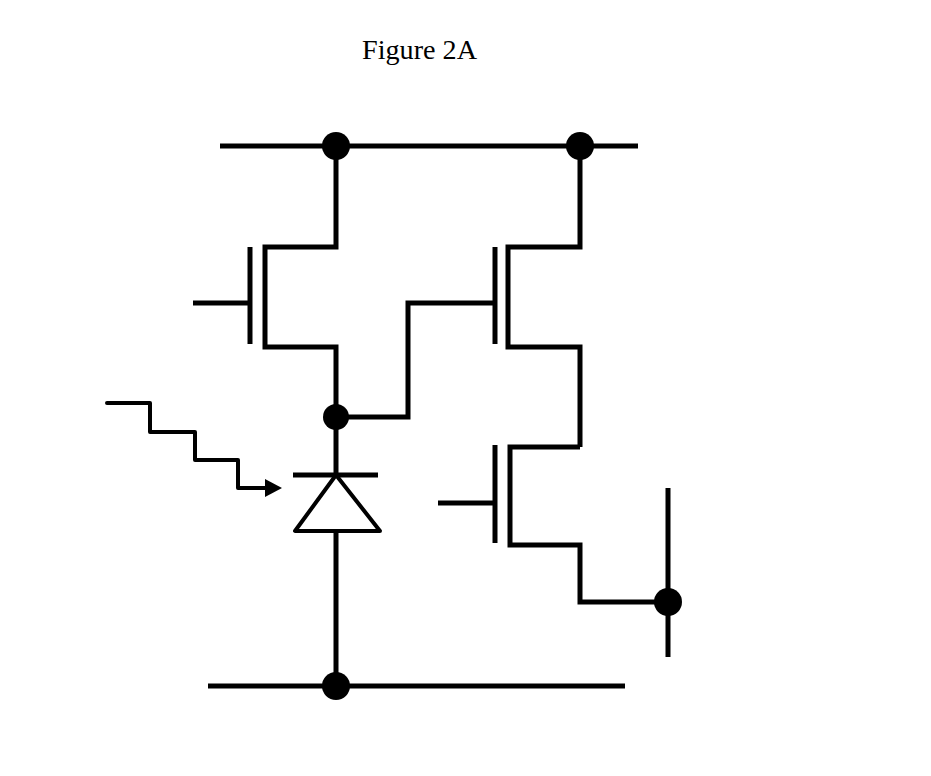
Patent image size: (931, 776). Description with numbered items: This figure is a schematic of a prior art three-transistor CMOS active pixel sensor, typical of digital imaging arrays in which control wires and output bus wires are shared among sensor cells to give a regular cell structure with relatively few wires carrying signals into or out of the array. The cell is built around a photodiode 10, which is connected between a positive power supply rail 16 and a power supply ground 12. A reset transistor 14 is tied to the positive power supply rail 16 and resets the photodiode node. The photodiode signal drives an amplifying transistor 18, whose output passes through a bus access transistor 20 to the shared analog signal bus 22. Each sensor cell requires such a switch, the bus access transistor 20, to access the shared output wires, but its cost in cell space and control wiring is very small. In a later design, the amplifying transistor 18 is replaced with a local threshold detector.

The photodiode 10 is at (316, 531).
The power supply ground 12 is at (260, 683).
The reset transistor 14 is at (248, 262).
The positive power supply rail 16 is at (277, 148).
The amplifying transistor 18 is at (492, 263).
The bus access transistor 20 is at (493, 522).
The analog signal bus 22 is at (668, 513).